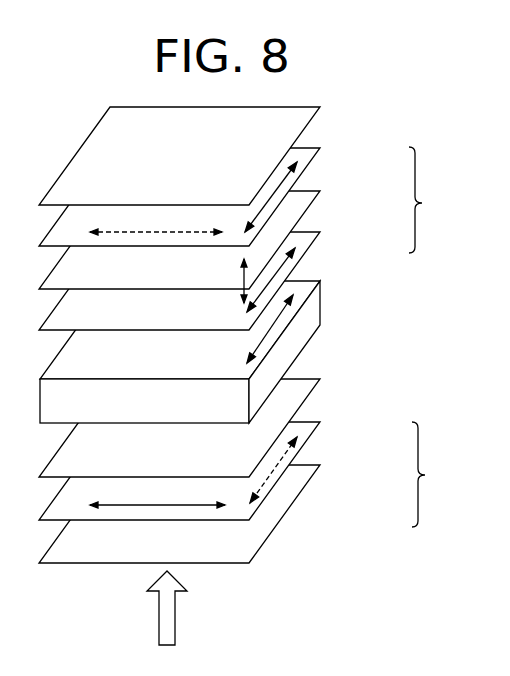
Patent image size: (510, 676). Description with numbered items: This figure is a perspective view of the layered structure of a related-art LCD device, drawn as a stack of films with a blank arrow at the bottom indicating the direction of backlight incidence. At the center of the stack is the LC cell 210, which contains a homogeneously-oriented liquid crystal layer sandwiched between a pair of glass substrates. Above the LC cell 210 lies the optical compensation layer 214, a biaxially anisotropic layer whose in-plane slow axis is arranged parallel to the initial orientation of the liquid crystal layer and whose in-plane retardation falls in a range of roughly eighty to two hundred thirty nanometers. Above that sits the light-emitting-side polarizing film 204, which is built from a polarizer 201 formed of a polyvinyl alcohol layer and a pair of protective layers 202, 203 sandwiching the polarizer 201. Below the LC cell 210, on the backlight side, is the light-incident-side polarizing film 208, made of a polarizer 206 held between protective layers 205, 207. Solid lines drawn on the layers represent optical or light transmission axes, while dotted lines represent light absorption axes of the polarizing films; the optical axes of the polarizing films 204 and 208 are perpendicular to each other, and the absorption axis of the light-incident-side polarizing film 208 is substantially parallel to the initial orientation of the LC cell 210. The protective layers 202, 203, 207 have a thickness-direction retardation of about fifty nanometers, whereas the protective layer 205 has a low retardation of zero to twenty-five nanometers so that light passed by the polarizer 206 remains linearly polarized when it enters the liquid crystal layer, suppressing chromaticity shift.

The polarizer 201 is at (290, 198).
The protective layer 202 is at (288, 160).
The protective layer 203 is at (288, 240).
The light-emitting-side polarizing film 204 is at (442, 200).
The protective layer 205 is at (295, 430).
The polarizer 206 is at (295, 472).
The protective layer 207 is at (295, 517).
The light-incident-side polarizing film 208 is at (445, 474).
The LC cell 210 is at (288, 331).
The optical compensation layer 214 is at (290, 288).